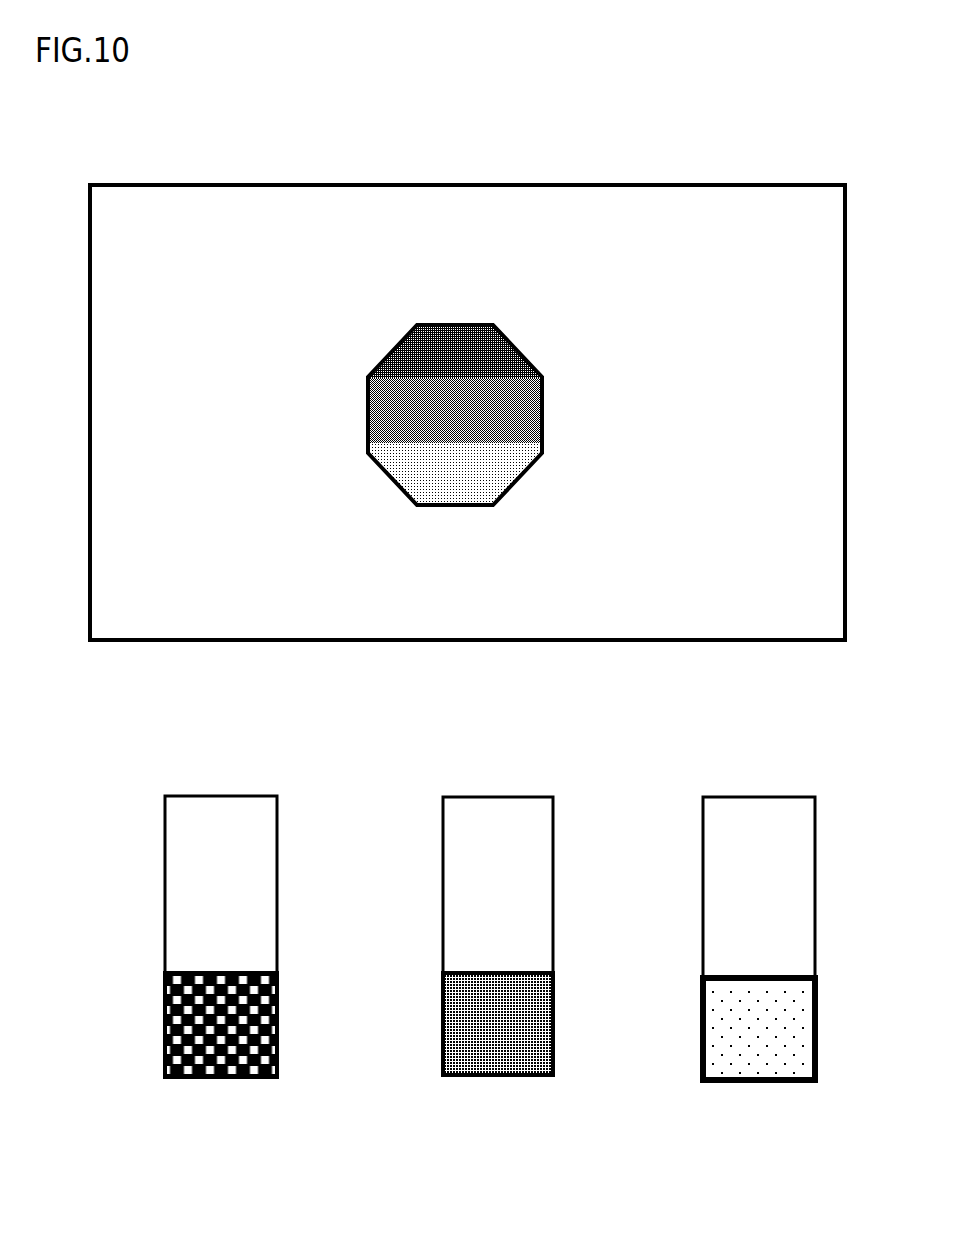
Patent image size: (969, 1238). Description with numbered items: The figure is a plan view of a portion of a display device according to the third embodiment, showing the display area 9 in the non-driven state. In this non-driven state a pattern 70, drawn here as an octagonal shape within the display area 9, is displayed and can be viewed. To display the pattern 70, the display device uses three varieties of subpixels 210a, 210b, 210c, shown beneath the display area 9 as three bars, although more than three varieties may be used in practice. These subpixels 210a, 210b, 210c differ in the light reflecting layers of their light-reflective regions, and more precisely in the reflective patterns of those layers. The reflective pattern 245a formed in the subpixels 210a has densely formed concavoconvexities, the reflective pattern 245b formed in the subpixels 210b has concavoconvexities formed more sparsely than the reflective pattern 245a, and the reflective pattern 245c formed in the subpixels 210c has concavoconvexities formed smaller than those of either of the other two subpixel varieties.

The display area 9 is at (607, 240).
The pattern 70 is at (397, 342).
The subpixel 210a is at (221, 994).
The subpixel 210b is at (498, 995).
The subpixel 210c is at (759, 1000).
The reflective pattern 245a is at (163, 1007).
The reflective pattern 245b is at (443, 1020).
The reflective pattern 245c is at (703, 1007).